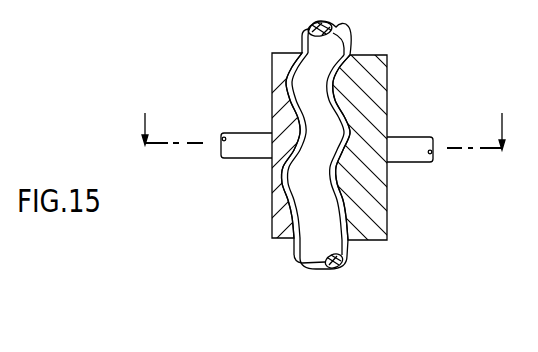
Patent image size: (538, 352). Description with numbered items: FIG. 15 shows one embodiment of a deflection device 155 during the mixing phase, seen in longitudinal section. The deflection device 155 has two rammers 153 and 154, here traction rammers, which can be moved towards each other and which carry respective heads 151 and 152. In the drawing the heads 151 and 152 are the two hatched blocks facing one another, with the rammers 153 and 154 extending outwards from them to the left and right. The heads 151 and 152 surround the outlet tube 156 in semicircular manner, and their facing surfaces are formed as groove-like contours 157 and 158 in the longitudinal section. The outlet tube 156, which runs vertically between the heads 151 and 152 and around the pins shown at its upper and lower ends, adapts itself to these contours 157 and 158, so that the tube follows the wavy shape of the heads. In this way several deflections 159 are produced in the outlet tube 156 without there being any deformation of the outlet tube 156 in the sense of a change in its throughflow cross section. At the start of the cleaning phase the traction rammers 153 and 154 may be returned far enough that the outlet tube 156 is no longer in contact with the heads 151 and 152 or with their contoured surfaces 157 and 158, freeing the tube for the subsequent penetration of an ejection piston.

The head 151 is at (279, 234).
The head 152 is at (373, 233).
The rammer 153 is at (252, 150).
The rammer 154 is at (412, 153).
The deflection device 155 is at (418, 83).
The outlet tube 156 is at (320, 247).
The groove-like contour 157 is at (303, 46).
The groove-like contour 158 is at (344, 52).
The deflection 159 is at (289, 124).